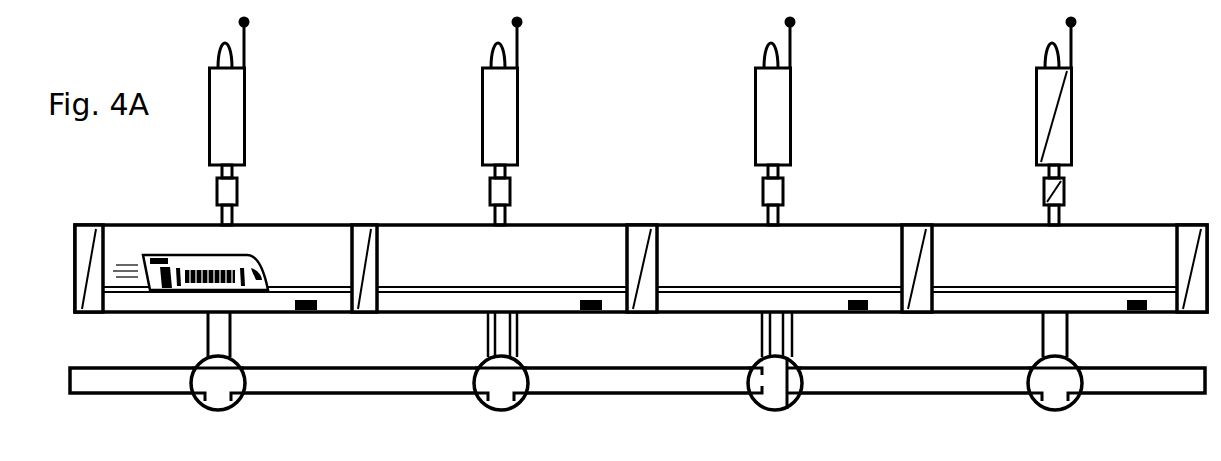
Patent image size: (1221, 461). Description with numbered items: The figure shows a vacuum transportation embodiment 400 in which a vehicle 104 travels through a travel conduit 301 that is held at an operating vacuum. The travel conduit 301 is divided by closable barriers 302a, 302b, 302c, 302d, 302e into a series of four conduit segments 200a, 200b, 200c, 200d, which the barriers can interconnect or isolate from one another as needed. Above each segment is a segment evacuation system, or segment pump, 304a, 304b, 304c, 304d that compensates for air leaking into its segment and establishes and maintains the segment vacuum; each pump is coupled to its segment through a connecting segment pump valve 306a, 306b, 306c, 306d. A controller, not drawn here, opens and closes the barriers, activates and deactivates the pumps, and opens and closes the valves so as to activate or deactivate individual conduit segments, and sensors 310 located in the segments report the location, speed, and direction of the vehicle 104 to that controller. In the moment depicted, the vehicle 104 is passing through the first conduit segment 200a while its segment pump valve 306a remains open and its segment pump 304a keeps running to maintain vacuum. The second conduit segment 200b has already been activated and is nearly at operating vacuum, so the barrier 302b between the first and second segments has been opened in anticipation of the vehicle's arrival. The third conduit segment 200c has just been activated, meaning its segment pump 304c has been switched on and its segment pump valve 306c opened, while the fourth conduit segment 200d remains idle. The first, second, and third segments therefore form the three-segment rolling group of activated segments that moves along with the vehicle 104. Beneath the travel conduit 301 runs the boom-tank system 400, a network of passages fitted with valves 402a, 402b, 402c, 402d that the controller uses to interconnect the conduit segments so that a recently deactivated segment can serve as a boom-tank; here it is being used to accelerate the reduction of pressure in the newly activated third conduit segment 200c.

The boom-tank system 400 is at (358, 74).
The travel conduit 301 is at (320, 225).
The closable barrier 302a is at (85, 225).
The closable barrier 302b is at (367, 225).
The closable barrier 302c is at (643, 225).
The closable barrier 302d is at (922, 225).
The closable barrier 302e is at (1193, 225).
The segment pump 304a is at (210, 105).
The segment pump 304b is at (482, 110).
The segment pump 304c is at (755, 115).
The segment pump 304d is at (1037, 115).
The segment pump valve 306a is at (237, 190).
The segment pump valve 306b is at (510, 190).
The segment pump valve 306c is at (783, 190).
The segment pump valve 306d is at (1064, 190).
The first conduit segment 200a is at (227, 263).
The second conduit segment 200b is at (502, 263).
The third conduit segment 200c is at (779, 263).
The fourth conduit segment 200d is at (1054, 263).
The vehicle 104 is at (182, 255).
The sensor 310 is at (307, 314).
The valve 402a is at (233, 405).
The valve 402b is at (515, 405).
The valve 402c is at (787, 405).
The valve 402d is at (1070, 405).